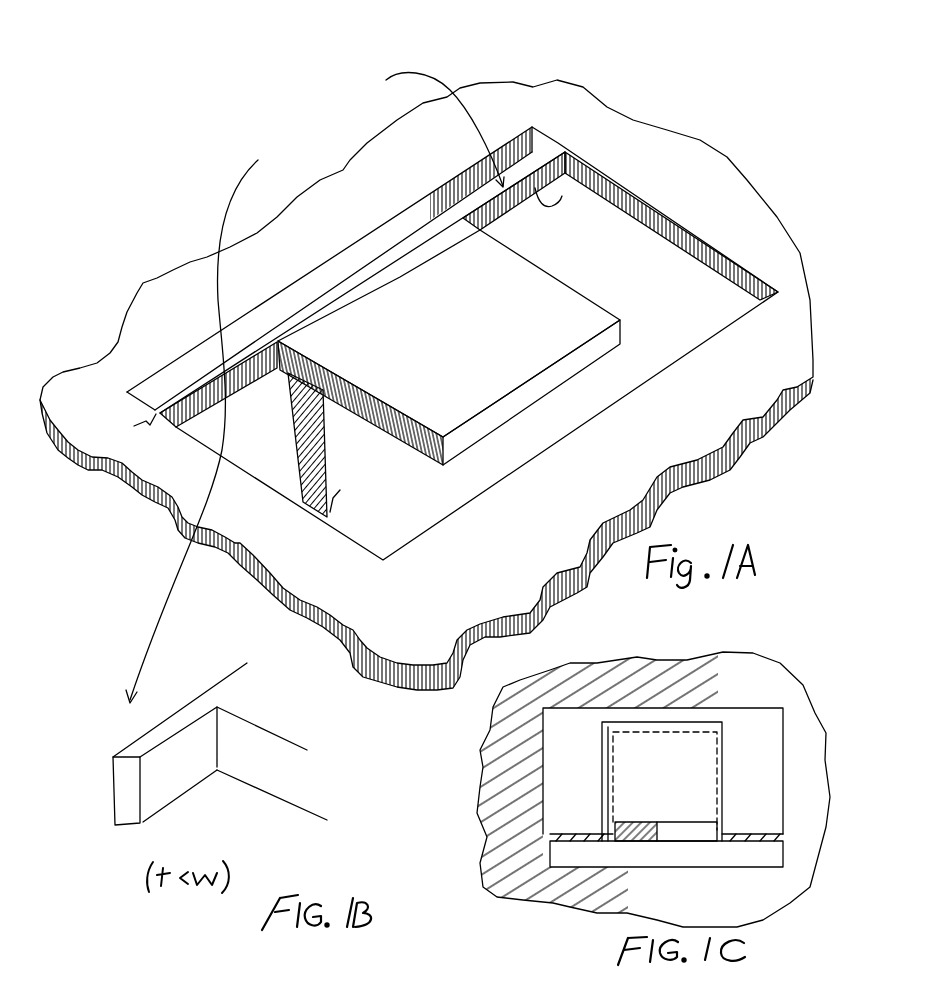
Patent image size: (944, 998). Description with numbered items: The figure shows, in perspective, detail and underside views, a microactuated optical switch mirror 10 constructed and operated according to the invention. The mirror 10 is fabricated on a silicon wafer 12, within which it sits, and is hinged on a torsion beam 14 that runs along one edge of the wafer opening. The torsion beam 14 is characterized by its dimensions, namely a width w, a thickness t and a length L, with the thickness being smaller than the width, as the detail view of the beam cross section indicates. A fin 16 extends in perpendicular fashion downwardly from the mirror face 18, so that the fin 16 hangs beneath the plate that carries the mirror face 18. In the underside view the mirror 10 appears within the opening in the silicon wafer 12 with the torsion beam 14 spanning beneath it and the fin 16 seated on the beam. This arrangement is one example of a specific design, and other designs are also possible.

In FIG. 1A, the microactuated optical switch mirror 10 is at (622, 222).
In FIG. 1C, the microactuated optical switch mirror 10 is at (687, 747).
In FIG. 1A, the silicon wafer 12 is at (550, 100).
In FIG. 1B, the silicon wafer 12 is at (211, 778).
In FIG. 1C, the silicon wafer 12 is at (488, 787).
In FIG. 1A, the torsion beam 14 is at (483, 289).
In FIG. 1C, the torsion beam 14 is at (613, 843).
In FIG. 1A, the fin 16 is at (327, 517).
In FIG. 1C, the fin 16 is at (613, 843).
In FIG. 1A, the mirror face 18 is at (485, 390).